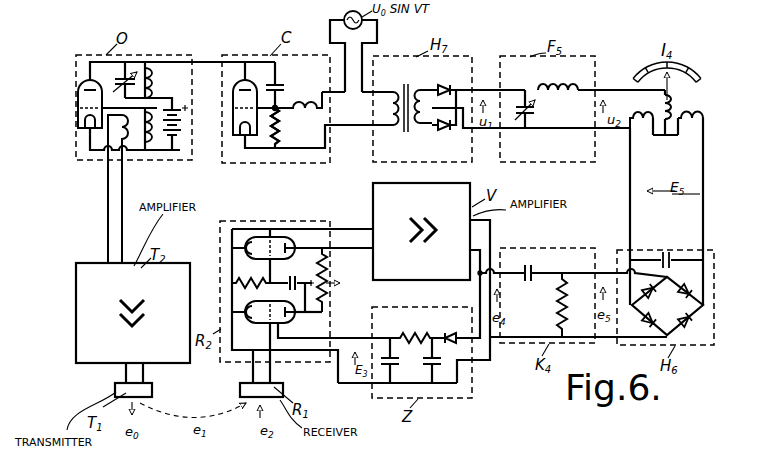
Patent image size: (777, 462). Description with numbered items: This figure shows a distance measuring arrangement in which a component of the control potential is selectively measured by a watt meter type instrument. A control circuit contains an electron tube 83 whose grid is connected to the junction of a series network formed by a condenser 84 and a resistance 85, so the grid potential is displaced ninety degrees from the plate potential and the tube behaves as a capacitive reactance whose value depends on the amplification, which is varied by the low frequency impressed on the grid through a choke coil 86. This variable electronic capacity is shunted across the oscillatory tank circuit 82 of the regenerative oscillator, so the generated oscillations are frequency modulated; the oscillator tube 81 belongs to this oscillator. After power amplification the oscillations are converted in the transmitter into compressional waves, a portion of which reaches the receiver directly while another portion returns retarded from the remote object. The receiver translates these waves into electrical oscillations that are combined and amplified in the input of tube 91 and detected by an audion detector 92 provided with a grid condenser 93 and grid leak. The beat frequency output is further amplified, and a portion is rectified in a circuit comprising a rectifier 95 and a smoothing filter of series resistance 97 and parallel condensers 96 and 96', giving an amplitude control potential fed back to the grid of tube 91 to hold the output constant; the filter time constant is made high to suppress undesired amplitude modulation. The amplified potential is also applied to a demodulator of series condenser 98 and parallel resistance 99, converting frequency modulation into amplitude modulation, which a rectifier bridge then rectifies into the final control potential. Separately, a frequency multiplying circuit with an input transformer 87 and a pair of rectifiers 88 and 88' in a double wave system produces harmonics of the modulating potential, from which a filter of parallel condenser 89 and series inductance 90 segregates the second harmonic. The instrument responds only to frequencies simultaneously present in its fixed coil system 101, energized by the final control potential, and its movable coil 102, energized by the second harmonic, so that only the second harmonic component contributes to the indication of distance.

The oscillator tube with feedback coil 81 is at (80, 118).
The oscillatory tank circuit 82 is at (134, 78).
The electron tube 83 is at (233, 120).
The condenser 84 is at (281, 87).
The resistance 85 is at (280, 125).
The choke coil 86 is at (298, 103).
The input transformer 87 is at (406, 126).
The rectifier 88 is at (447, 80).
The rectifier 88' is at (444, 140).
The parallel condenser 89 is at (527, 113).
The series inductance 90 is at (553, 85).
The input amplifier tube 91 is at (266, 323).
The audion detector 92 is at (297, 249).
The grid condenser 93 is at (296, 273).
The rectifier 95 is at (452, 333).
The parallel condenser 96 is at (439, 356).
The parallel condenser 96' is at (402, 357).
The series resistance 97 is at (420, 329).
The series condenser 98 is at (532, 273).
The parallel resistance 99 is at (557, 303).
The fixed coil system 101 is at (690, 125).
The movable coil 102 is at (673, 104).